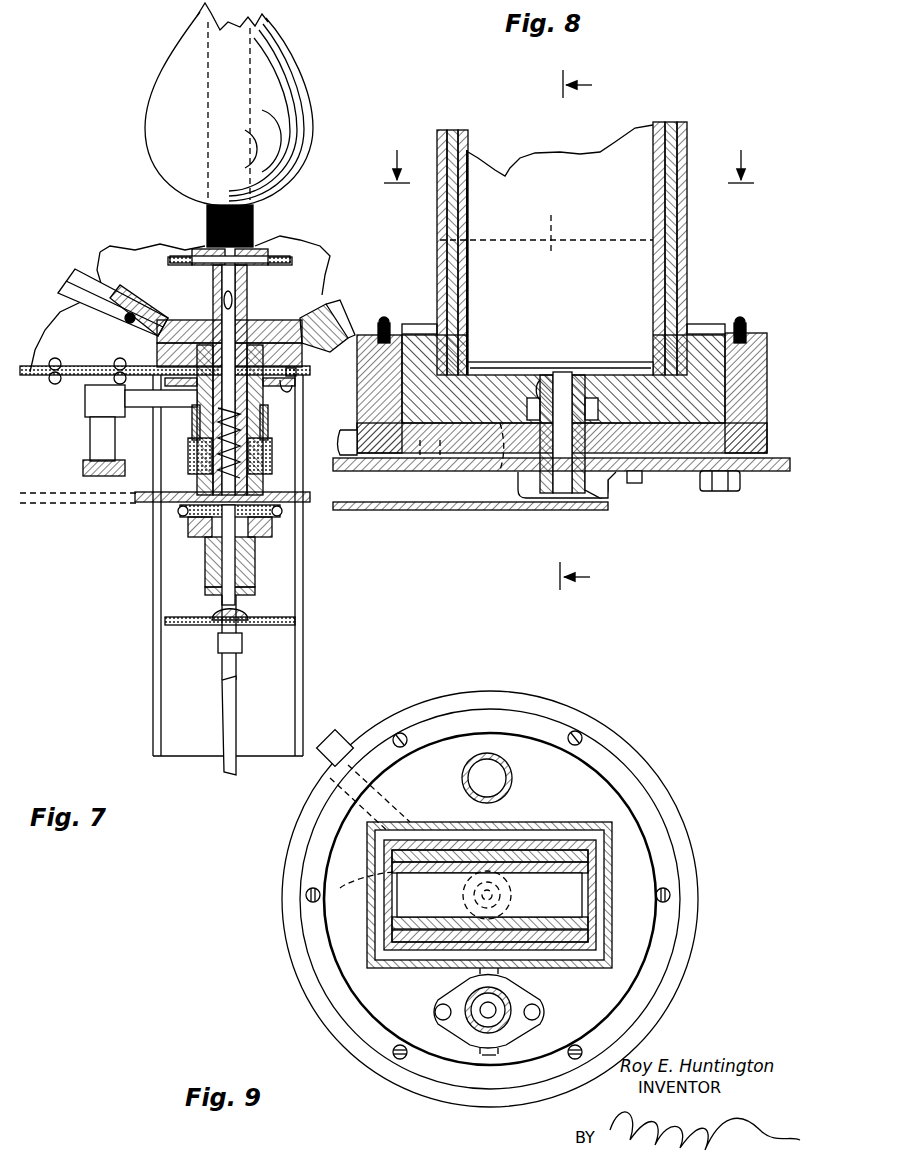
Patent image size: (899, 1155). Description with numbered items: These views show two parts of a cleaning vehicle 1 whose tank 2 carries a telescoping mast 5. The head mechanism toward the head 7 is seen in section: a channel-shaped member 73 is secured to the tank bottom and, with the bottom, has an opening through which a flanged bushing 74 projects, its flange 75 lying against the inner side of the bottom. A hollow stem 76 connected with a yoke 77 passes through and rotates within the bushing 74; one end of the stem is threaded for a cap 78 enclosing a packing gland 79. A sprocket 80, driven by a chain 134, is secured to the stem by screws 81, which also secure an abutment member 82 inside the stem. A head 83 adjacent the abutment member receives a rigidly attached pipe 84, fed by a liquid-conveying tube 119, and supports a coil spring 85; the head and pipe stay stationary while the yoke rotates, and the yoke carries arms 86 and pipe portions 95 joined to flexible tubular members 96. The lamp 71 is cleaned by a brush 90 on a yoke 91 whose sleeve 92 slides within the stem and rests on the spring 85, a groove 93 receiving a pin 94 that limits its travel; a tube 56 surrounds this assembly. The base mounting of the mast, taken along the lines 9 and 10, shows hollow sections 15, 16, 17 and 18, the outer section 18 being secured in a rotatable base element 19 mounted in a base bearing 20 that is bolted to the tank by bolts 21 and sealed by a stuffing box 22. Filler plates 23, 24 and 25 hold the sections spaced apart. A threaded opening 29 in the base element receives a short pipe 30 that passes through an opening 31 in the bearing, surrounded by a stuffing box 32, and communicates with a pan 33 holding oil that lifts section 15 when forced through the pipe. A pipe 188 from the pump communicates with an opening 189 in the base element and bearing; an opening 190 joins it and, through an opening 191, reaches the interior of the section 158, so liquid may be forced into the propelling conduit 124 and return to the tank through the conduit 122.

In FIG. 8, the power-propelled vehicle 1 is at (770, 472).
In FIG. 8, the tank 2 is at (680, 472).
In FIG. 8, the mast 5 is at (436, 221).
In FIG. 9, the mast 5 is at (366, 866).
In FIG. 7, the head 7 is at (143, 634).
In FIG. 8, the section line 9— 9 is at (569, 157).
In FIG. 8, the section line 10— 10 is at (587, 330).
In FIG. 8, the mast section 15 is at (652, 310).
In FIG. 9, the mast section 15 is at (424, 926).
In FIG. 8, the mast section 16 is at (456, 272).
In FIG. 9, the mast section 16 is at (560, 926).
In FIG. 8, the mast section 17 is at (665, 205).
In FIG. 9, the mast section 17 is at (422, 962).
In FIG. 8, the outer mast section 18 is at (687, 225).
In FIG. 9, the outer mast section 18 is at (600, 962).
In FIG. 8, the rotatable base element 19 is at (422, 332).
In FIG. 9, the rotatable base element 19 is at (575, 782).
In FIG. 8, the base bearing 20 is at (750, 410).
In FIG. 9, the base bearing 20 is at (680, 829).
In FIG. 8, the bolts 21 is at (722, 482).
In FIG. 7, the stuffing box 22 is at (298, 372).
In FIG. 8, the stuffing box 22 is at (752, 338).
In FIG. 9, the stuffing box 22 is at (678, 899).
In FIG. 8, the filler plates 23 is at (546, 225).
In FIG. 9, the filler plates 23 is at (519, 899).
In FIG. 9, the filler plates 24 is at (536, 858).
In FIG. 9, the filler plates 25 is at (456, 832).
In FIG. 8, the threaded opening 29 is at (537, 396).
In FIG. 8, the short pipe 30 is at (562, 498).
In FIG. 9, the short pipe 30 is at (526, 964).
In FIG. 8, the opening 31 is at (535, 500).
In FIG. 8, the stuffing box 32 is at (607, 502).
In FIG. 8, the pan 33 is at (462, 510).
In FIG. 7, the housing tube 56 is at (170, 683).
In FIG. 7, the lamp 71 is at (235, 118).
In FIG. 7, the channel-shaped member 73 is at (268, 396).
In FIG. 7, the flanged bushing 74 is at (268, 404).
In FIG. 7, the flange 75 is at (160, 352).
In FIG. 7, the hollow stem 76 is at (206, 550).
In FIG. 7, the yoke 77 is at (268, 326).
In FIG. 7, the cap 78 is at (200, 462).
In FIG. 7, the packing gland 79 is at (258, 458).
In FIG. 7, the sprocket 80 is at (190, 512).
In FIG. 7, the screws 81 is at (278, 512).
In FIG. 7, the abutment member 82 is at (252, 536).
In FIG. 7, the head 83 is at (200, 497).
In FIG. 7, the pipe 84 is at (232, 604).
In FIG. 7, the coil spring 85 is at (214, 430).
In FIG. 7, the arms 86 is at (322, 305).
In FIG. 7, the brush 90 is at (216, 58).
In FIG. 7, the yoke 91 is at (205, 266).
In FIG. 7, the sleeve 92 is at (214, 296).
In FIG. 7, the groove 93 is at (222, 313).
In FIG. 7, the pin 94 is at (200, 386).
In FIG. 7, the pipe portions 95 is at (205, 254).
In FIG. 7, the flexible tubular members 96 is at (168, 259).
In FIG. 7, the liquid-conveying tube 119 is at (232, 703).
In FIG. 9, the conduit 122 is at (488, 752).
In FIG. 9, the propelling conduit 124 is at (483, 1042).
In FIG. 7, the chain 134 is at (66, 504).
In FIG. 9, the section 158 is at (512, 1028).
In FIG. 8, the pipe 188 is at (358, 444).
In FIG. 9, the pipe 188 is at (338, 735).
In FIG. 8, the opening 189 is at (520, 472).
In FIG. 9, the opening 189 is at (361, 888).
In FIG. 8, the opening 190 is at (475, 472).
In FIG. 9, the opening 190 is at (400, 820).
In FIG. 9, the opening 191 is at (470, 1010).